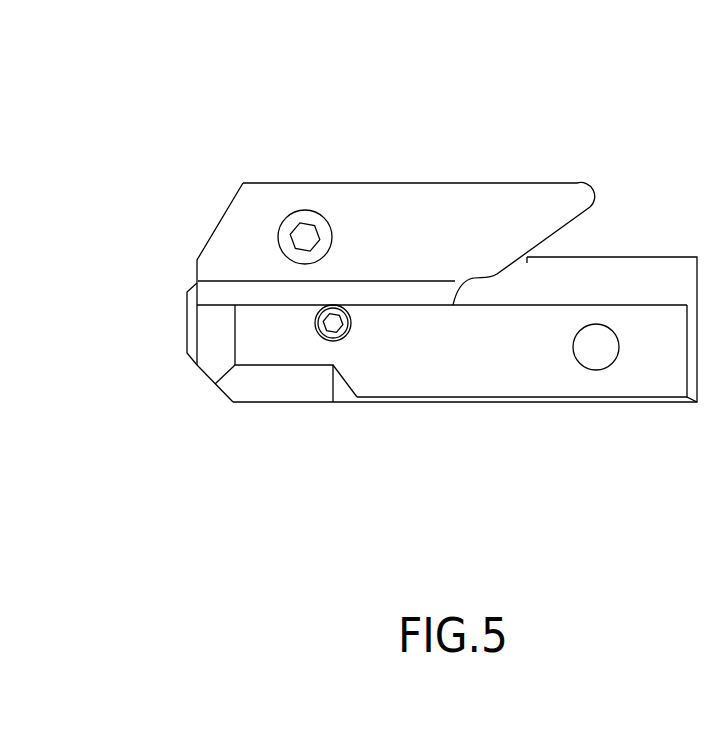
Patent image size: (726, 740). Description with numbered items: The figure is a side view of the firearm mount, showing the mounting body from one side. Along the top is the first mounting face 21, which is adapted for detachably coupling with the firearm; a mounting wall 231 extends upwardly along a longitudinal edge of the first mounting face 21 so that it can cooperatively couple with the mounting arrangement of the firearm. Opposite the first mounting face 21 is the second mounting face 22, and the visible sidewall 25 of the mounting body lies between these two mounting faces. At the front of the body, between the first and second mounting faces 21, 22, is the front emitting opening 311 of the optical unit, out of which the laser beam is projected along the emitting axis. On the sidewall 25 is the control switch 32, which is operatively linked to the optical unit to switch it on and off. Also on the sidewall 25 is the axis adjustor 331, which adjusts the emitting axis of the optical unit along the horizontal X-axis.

The first mounting face 21 is at (617, 256).
The second mounting face 22 is at (403, 414).
The sidewall 25 is at (483, 372).
The control switch 32 is at (596, 347).
The mounting wall 231 is at (388, 197).
The front emitting opening 311 is at (180, 334).
The axis adjustor 331 is at (333, 323).